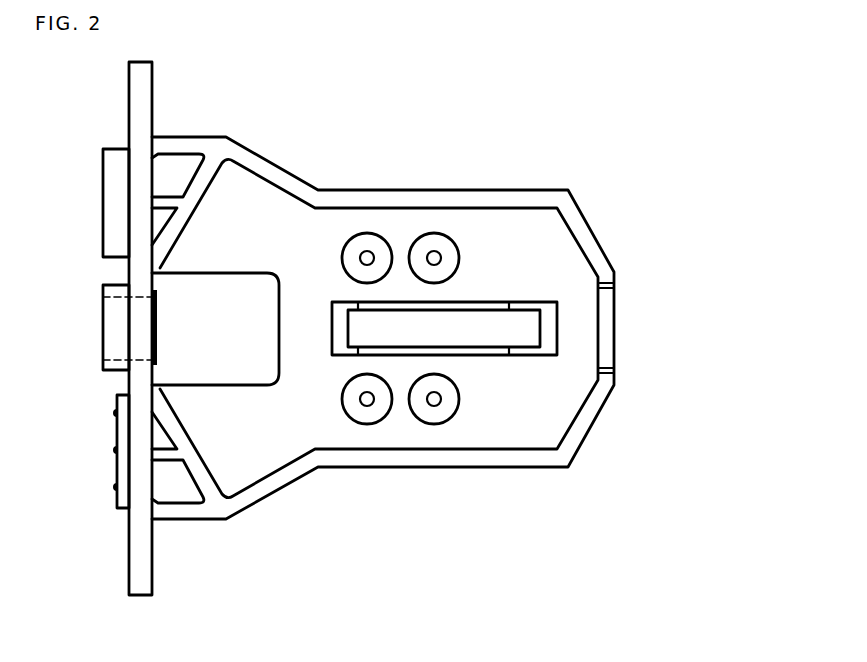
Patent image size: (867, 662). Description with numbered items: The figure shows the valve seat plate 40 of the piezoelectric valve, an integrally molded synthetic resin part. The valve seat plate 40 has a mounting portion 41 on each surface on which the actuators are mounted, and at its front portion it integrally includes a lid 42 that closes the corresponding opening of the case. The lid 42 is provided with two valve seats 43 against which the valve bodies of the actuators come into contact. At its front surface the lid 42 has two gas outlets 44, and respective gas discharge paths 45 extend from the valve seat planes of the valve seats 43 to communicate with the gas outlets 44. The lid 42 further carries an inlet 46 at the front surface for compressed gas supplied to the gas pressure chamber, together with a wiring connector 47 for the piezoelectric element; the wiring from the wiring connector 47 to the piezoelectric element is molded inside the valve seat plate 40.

The valve seat plate 40 is at (326, 128).
The mounting portion 41 is at (493, 230).
The lid 42 is at (142, 122).
The valve seat 43 is at (152, 348).
The gas outlet 44 is at (112, 292).
The gas discharge path 45 is at (117, 328).
The inlet 46 is at (113, 203).
The wiring connector 47 is at (123, 468).